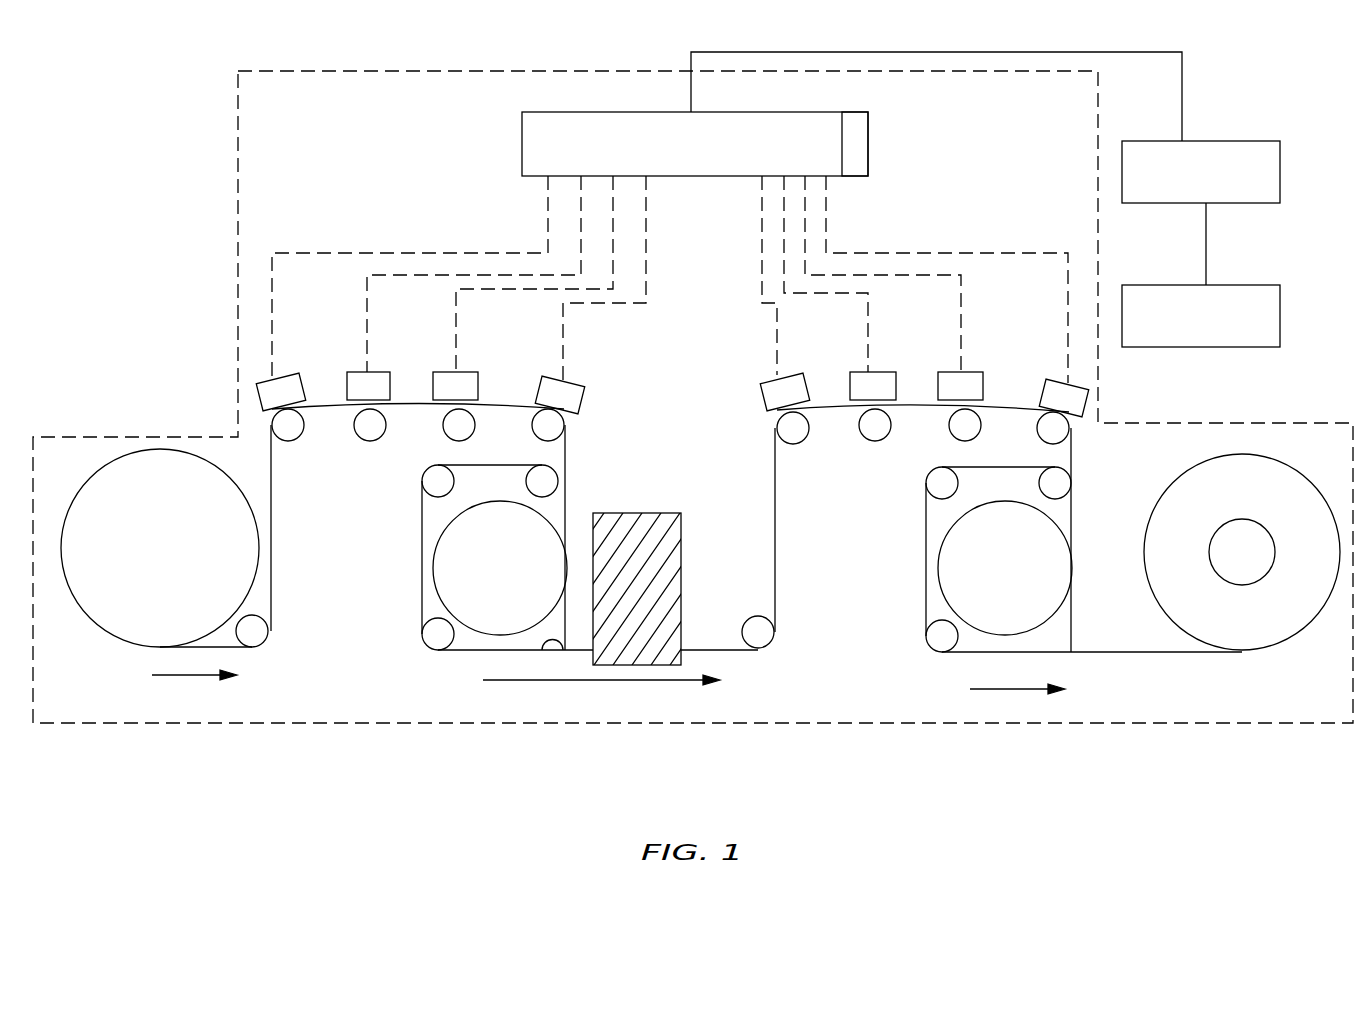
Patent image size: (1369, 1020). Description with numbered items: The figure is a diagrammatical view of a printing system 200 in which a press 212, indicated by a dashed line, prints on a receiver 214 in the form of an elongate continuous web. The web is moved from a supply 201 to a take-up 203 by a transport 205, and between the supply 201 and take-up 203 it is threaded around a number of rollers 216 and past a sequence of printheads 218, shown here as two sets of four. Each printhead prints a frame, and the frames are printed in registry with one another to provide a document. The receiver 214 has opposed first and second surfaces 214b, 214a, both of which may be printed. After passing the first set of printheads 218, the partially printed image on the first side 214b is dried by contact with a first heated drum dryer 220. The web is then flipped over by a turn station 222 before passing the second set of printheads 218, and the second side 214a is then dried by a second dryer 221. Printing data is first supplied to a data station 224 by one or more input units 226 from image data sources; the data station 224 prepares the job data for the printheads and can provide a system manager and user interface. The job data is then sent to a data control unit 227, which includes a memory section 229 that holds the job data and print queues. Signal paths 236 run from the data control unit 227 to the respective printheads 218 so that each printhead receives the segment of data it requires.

The system 200 is at (152, 82).
The supply 201 is at (100, 630).
The take-up 203 is at (1273, 648).
The transport 205 is at (1216, 575).
The press 212 is at (1038, 725).
The receiver 214 is at (410, 517).
The second surface 214a is at (560, 652).
The first surface 214b is at (458, 652).
The rollers 216 is at (262, 617).
The printheads 218 is at (352, 360).
The first heated drum dryer 220 is at (545, 518).
The second dryer 221 is at (1052, 513).
The turn station 222 is at (672, 513).
The data station 224 is at (1282, 165).
The input units 226 is at (1282, 315).
The data control unit 227 is at (522, 140).
The memory section 229 is at (862, 138).
The signal paths 236 is at (832, 277).